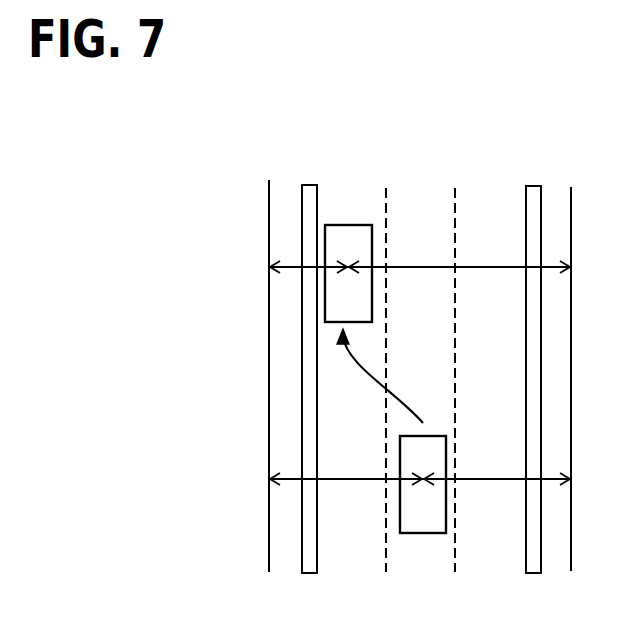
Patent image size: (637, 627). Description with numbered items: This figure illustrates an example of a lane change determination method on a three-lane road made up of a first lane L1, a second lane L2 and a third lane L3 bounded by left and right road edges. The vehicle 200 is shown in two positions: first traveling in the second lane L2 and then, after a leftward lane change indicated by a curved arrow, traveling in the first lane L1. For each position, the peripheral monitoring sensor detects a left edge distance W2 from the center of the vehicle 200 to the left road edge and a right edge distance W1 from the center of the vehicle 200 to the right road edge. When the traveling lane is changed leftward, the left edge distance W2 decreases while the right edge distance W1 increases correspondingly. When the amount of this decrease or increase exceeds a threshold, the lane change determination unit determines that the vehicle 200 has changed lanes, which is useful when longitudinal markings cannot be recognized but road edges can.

The vehicle 200 is at (372, 308).
The first lane L1 is at (358, 198).
The second lane L2 is at (413, 198).
The third lane L3 is at (486, 198).
The right edge distance W1 is at (459, 359).
The left edge distance W2 is at (346, 359).